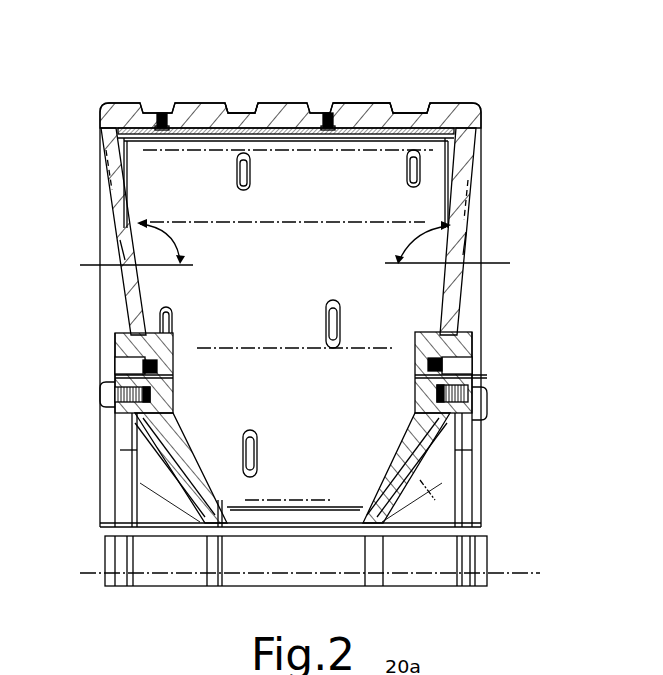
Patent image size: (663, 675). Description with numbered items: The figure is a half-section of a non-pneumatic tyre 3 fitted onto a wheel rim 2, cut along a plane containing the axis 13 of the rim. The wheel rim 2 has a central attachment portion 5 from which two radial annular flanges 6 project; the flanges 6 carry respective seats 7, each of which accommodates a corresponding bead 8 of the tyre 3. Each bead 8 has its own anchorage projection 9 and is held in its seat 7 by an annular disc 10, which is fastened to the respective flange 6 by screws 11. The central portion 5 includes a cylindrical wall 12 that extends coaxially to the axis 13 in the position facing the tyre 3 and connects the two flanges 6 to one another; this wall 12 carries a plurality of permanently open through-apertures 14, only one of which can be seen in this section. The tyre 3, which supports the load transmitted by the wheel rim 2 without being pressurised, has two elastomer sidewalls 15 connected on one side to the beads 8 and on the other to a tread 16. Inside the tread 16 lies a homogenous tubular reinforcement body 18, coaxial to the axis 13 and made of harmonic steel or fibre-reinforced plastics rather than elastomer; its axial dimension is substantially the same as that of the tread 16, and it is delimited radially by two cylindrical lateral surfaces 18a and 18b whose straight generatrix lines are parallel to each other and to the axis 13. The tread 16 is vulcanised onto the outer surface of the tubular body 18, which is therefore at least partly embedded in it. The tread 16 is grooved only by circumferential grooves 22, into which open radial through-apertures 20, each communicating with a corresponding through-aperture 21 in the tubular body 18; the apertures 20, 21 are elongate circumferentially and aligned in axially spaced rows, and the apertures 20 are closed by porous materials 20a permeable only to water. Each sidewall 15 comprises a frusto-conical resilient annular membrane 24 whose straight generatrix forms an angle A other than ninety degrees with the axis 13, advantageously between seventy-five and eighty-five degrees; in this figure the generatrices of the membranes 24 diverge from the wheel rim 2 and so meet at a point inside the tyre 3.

The wheel rim 2 is at (431, 491).
The tyre 3 is at (491, 140).
The central attachment portion 5 is at (151, 596).
The radial annular flange 6 is at (148, 420).
The seat 7 is at (140, 365).
The bead 8 is at (127, 351).
The anchorage projection 9 is at (116, 376).
The annular disc 10 is at (125, 426).
The screw 11 is at (104, 400).
The cylindrical wall 12 is at (293, 500).
The axis 13 is at (530, 574).
The through-aperture 14 is at (226, 500).
The sidewall 15 is at (96, 208).
The tread 16 is at (341, 94).
The tubular reinforcement body 18 is at (207, 124).
The cylindrical lateral surface 18a is at (274, 120).
The cylindrical lateral surface 18b is at (292, 146).
The radial through-aperture 20 is at (158, 118).
The water-permeable material 20a is at (163, 112).
The through-aperture 21 is at (157, 134).
The circumferential groove 22 is at (235, 100).
The frusto-conical resilient annular membrane 24 is at (122, 242).
The angle A is at (295, 239).